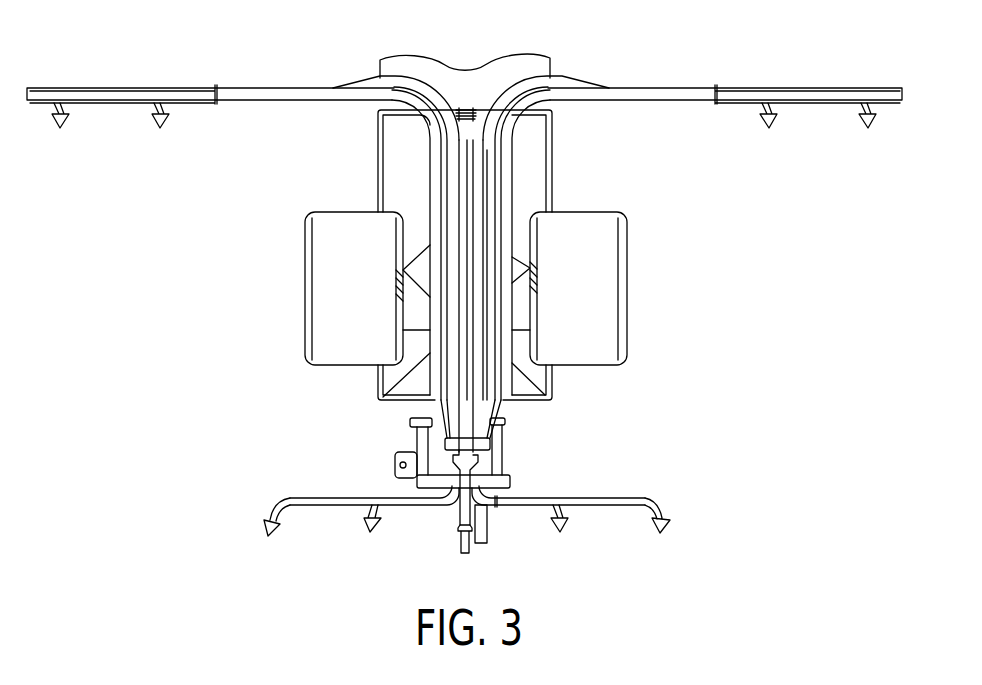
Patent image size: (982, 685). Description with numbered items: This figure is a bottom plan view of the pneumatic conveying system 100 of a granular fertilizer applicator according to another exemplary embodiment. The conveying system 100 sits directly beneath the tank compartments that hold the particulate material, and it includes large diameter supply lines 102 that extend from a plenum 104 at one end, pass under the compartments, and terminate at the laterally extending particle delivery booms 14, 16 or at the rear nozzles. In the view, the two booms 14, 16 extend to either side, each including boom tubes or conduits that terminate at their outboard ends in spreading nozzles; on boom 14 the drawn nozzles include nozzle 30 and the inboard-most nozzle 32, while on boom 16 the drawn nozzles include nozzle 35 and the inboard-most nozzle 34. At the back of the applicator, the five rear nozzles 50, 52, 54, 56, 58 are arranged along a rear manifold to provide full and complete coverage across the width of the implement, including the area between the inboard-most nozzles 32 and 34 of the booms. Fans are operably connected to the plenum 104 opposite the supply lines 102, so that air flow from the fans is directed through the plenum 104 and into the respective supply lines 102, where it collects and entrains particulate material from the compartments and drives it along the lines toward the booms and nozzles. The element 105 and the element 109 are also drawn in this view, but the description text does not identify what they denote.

The particle delivery boom 14 is at (680, 74).
The particle delivery boom 16 is at (343, 74).
The nozzle 30 is at (868, 129).
The nozzle 32 is at (769, 129).
The nozzle 34 is at (159, 129).
The nozzle 35 is at (59, 129).
The rear nozzle 50 is at (660, 534).
The rear nozzle 52 is at (560, 533).
The rear nozzle 54 is at (455, 535).
The rear nozzle 56 is at (370, 533).
The rear nozzle 58 is at (268, 537).
The pneumatic conveying system 100 is at (370, 404).
The supply lines 102 is at (453, 207).
The plenum 104 is at (495, 473).
The wheel 105 is at (507, 302).
The fitting 109 is at (478, 412).